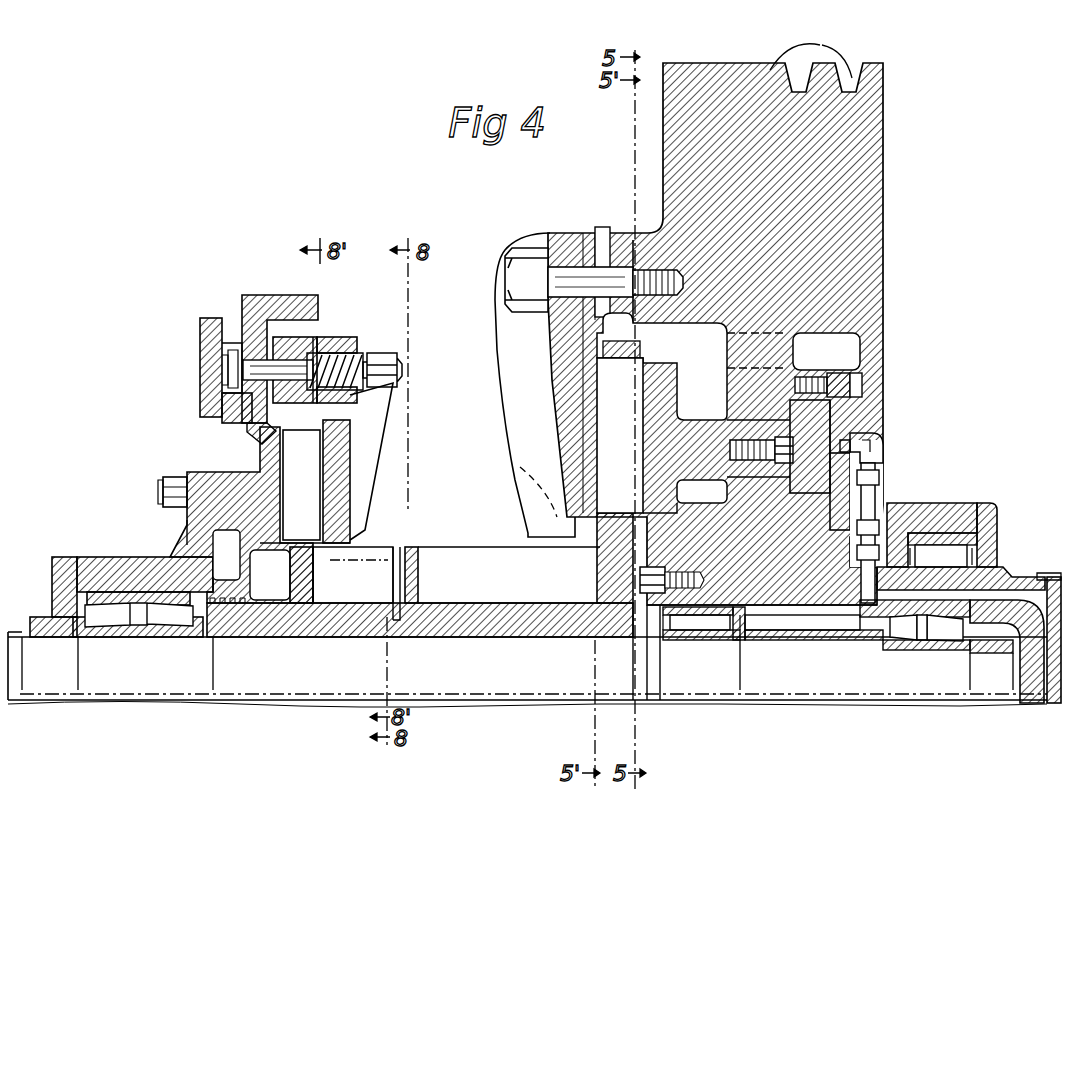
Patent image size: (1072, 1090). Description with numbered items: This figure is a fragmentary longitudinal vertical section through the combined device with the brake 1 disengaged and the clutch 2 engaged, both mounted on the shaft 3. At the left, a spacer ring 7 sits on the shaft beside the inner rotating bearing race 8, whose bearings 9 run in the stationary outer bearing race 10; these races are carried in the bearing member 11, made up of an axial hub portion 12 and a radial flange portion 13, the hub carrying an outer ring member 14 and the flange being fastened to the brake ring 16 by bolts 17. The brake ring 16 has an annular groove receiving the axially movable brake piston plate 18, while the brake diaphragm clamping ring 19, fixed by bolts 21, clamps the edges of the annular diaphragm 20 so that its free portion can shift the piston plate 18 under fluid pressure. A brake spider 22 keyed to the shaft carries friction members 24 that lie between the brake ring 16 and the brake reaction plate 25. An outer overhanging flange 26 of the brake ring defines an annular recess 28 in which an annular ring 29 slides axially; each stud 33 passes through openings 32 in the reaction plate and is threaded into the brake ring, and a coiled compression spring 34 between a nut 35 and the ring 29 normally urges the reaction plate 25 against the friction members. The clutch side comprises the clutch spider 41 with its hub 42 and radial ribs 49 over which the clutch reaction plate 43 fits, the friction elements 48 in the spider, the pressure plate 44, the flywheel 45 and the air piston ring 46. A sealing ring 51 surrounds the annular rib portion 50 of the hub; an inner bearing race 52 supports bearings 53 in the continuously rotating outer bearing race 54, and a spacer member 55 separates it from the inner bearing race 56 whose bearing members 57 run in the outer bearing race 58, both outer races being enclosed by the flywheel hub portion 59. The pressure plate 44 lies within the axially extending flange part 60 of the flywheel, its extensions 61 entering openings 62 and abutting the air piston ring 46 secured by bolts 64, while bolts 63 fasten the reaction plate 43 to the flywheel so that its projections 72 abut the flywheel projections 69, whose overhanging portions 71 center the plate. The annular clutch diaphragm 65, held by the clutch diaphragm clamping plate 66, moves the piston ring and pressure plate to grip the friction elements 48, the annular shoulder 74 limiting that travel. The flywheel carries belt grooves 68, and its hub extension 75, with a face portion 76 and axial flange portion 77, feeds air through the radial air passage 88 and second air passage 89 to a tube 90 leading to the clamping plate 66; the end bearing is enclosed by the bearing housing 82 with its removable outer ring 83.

The brake 1 is at (240, 296).
The clutch 2 is at (598, 190).
The shaft 3 is at (263, 683).
The spacer ring 7 is at (64, 640).
The inner rotating bearing race 8 is at (110, 637).
The bearings 9 is at (141, 637).
The outer bearing race 10 is at (100, 592).
The bearing member 11 is at (170, 556).
The axial hub portion 12 is at (123, 556).
The radial flange portion 13 is at (187, 520).
The outer ring member 14 is at (55, 565).
The brake ring 16 is at (236, 411).
The bolts 17 is at (163, 481).
The brake piston plate or ring 18 is at (222, 362).
The brake diaphragm clamping ring 19 is at (222, 356).
The annular diaphragm 20 is at (228, 370).
The bolts 21 is at (202, 326).
The brake spider 22 is at (533, 665).
The friction members 24 is at (333, 500).
The brake reaction plate 25 is at (350, 450).
The outer overhanging axially extending flange 26 is at (283, 295).
The annular recess 28 is at (315, 330).
The annular ring 29 is at (320, 342).
The openings 32 is at (358, 354).
The stud 33 is at (290, 362).
The coiled compression spring 34 is at (360, 390).
The nut 35 is at (385, 367).
The clutch spider 41 is at (610, 580).
The hub 42 is at (481, 612).
The clutch reaction plate 43 is at (527, 473).
The pressure plate 44 is at (670, 392).
The flywheel 45 is at (876, 192).
The air piston ring 46 is at (818, 417).
The clutch lining segment or friction element 48 is at (612, 425).
The radially extending fins or ribs 49 is at (418, 575).
The annular rib portion 50 is at (649, 696).
The sealing ring 51 is at (661, 567).
The inner bearing race 52 is at (702, 641).
The bearings 53 is at (688, 620).
The outer bearing race 54 is at (735, 641).
The spacer member 55 is at (773, 641).
The inner bearing race 56 is at (884, 647).
The bearing members 57 is at (905, 645).
The outer bearing race 58 is at (923, 628).
The hub portion 59 is at (817, 598).
The axially extending flange part 60 is at (560, 348).
The axially extending extensions 61 is at (712, 430).
The openings 62 is at (770, 418).
The bolts 63 is at (566, 275).
The bolts 64 is at (880, 440).
The annular clutch diaphragm 65 is at (877, 487).
The clutch diaphragm clamping plate 66 is at (855, 394).
The grooves 68 is at (810, 76).
The projections 69 is at (621, 226).
The overhanging portion 71 is at (603, 228).
The axially extending projections 72 is at (582, 230).
The annular shoulder 74 is at (842, 490).
The flywheel hub extension 75 is at (1012, 556).
The face portion 76 is at (1052, 700).
The axially extending flange portion 77 is at (1010, 576).
The bearing housing 82 is at (964, 508).
The removable outer ring 83 is at (998, 514).
The air passage 88 is at (1036, 683).
The second air passage 89 is at (1000, 600).
The tube 90 is at (886, 453).